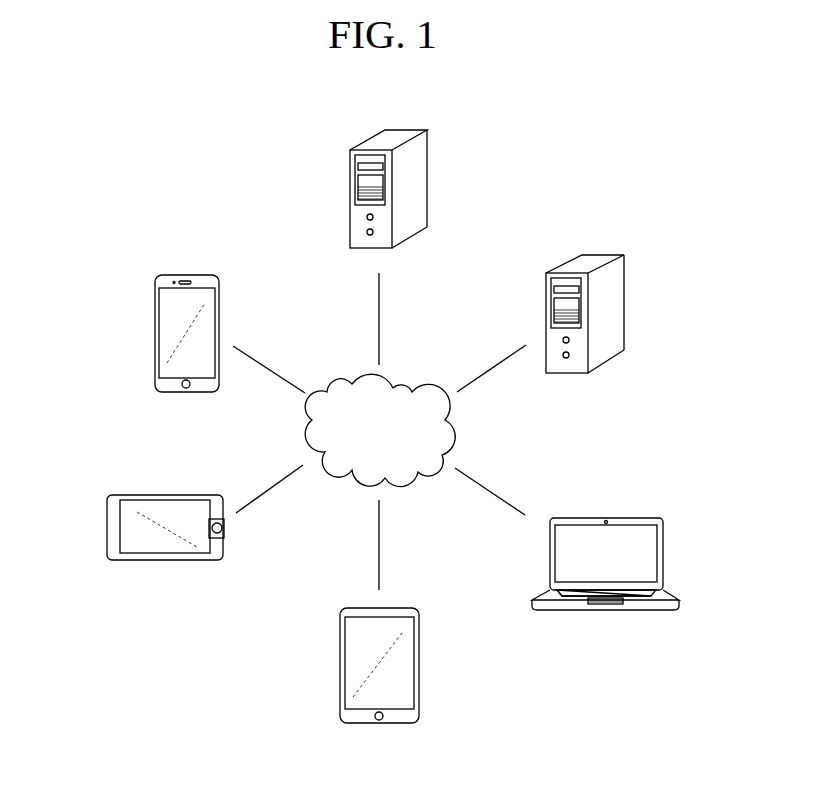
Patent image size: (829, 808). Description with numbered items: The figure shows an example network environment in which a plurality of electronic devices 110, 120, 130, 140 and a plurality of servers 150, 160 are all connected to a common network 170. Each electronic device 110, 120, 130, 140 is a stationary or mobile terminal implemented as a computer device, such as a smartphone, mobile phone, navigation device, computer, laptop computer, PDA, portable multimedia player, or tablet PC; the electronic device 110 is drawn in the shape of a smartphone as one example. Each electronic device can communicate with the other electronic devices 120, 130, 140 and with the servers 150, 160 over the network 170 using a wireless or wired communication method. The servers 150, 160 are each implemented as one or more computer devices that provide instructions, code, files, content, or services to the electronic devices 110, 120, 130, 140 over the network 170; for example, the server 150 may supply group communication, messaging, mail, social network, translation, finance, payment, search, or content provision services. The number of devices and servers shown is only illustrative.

The electronic device 110 is at (155, 335).
The electronic device 120 is at (107, 527).
The electronic device 130 is at (419, 663).
The electronic device 140 is at (663, 555).
The server 150 is at (622, 300).
The server 160 is at (427, 178).
The network 170 is at (402, 381).